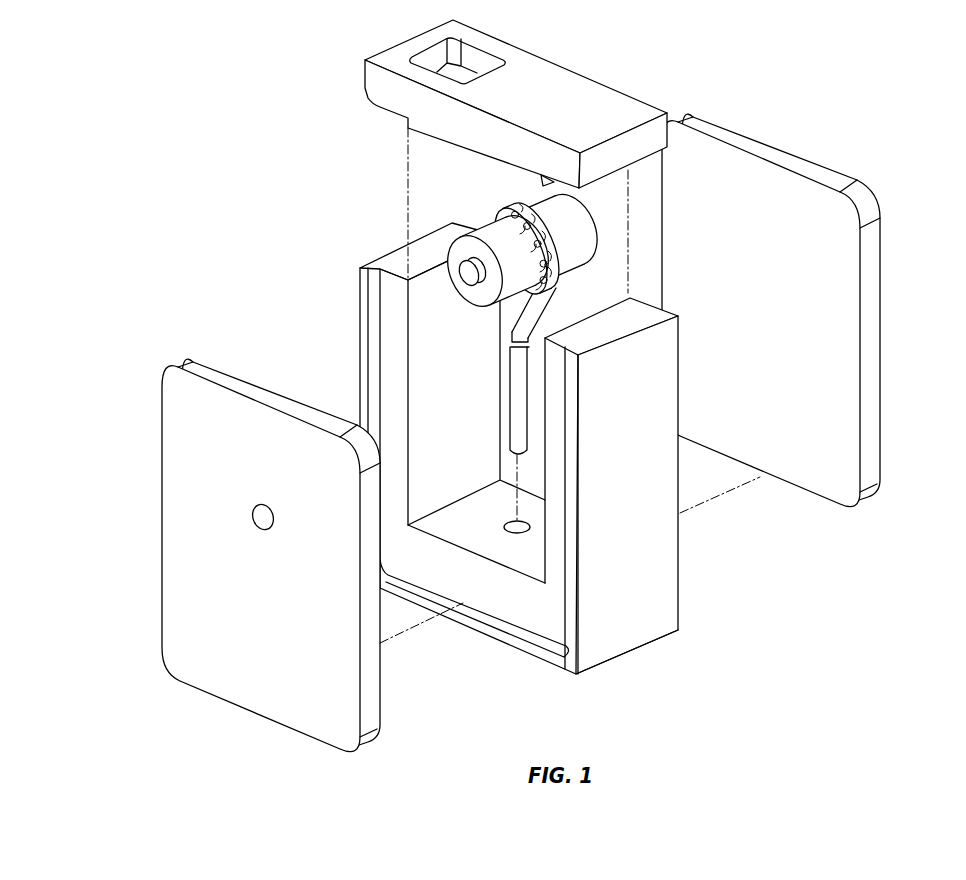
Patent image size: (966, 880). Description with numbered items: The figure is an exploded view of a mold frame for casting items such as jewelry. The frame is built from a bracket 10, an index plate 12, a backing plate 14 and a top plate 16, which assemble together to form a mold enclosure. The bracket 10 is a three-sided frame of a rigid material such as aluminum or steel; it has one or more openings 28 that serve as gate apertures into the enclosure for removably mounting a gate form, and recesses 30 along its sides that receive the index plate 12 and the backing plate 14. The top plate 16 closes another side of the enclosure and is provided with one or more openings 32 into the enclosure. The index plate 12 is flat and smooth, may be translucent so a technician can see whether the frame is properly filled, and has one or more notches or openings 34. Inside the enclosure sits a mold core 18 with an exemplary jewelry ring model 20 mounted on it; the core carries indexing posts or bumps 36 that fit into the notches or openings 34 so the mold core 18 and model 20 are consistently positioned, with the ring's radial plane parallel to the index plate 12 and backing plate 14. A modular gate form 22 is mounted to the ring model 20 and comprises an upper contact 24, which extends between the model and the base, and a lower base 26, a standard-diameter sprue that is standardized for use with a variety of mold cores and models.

The bracket 10 is at (516, 448).
The index plate 12 is at (240, 555).
The backing plate 14 is at (880, 348).
The top plate 16 is at (516, 98).
The mold core 18 is at (574, 320).
The jewelry ring model 20 is at (493, 222).
The gate form 22 is at (538, 318).
The upper contact 24 is at (535, 300).
The lower base 26 is at (512, 402).
The openings 28 is at (506, 524).
The recesses 30 is at (373, 305).
The openings 32 is at (485, 48).
The notches or openings 34 is at (255, 511).
The indexing posts or bumps 36 is at (468, 278).